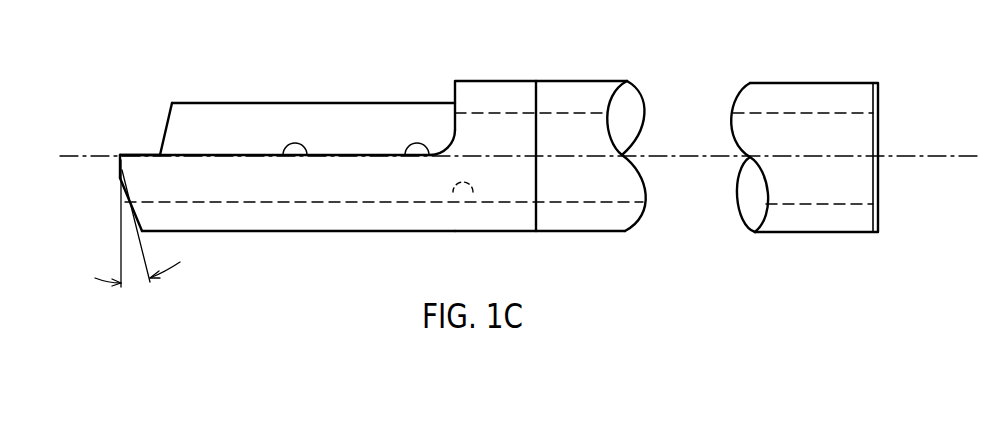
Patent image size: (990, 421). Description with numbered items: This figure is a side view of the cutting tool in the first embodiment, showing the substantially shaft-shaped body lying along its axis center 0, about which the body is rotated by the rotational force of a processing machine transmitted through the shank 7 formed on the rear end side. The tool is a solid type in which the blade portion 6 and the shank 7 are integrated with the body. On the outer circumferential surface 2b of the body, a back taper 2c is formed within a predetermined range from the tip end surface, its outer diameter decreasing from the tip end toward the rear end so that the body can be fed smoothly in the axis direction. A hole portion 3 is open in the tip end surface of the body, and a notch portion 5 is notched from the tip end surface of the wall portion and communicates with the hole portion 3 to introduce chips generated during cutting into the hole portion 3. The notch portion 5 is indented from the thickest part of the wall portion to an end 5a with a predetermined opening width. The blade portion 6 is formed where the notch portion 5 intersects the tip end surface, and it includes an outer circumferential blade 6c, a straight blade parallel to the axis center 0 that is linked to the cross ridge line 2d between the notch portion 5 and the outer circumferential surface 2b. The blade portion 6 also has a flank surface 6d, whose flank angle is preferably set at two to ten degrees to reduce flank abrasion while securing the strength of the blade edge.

The axis center 0 is at (933, 157).
The outer circumferential surface 2b is at (578, 81).
The back taper 2c is at (478, 81).
The cross ridge line 2d is at (285, 156).
The hole portion 3 is at (453, 195).
The notch portion 5 is at (407, 156).
The end of the notch portion 5a is at (219, 113).
The blade portion 6 is at (112, 167).
The outer circumferential blade 6c is at (120, 155).
The flank surface 6d is at (122, 178).
The shank 7 is at (855, 83).